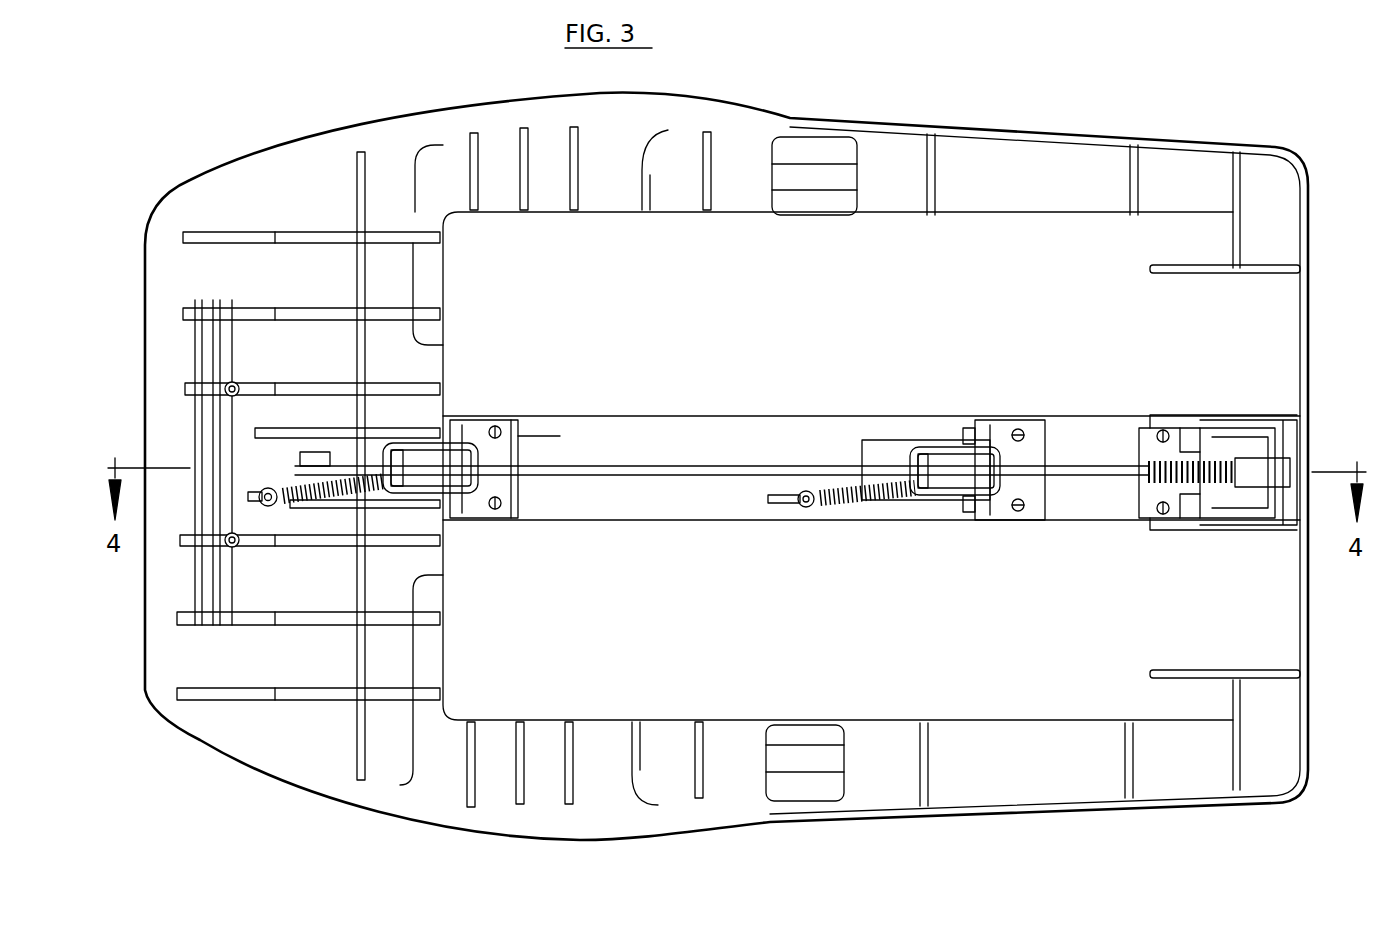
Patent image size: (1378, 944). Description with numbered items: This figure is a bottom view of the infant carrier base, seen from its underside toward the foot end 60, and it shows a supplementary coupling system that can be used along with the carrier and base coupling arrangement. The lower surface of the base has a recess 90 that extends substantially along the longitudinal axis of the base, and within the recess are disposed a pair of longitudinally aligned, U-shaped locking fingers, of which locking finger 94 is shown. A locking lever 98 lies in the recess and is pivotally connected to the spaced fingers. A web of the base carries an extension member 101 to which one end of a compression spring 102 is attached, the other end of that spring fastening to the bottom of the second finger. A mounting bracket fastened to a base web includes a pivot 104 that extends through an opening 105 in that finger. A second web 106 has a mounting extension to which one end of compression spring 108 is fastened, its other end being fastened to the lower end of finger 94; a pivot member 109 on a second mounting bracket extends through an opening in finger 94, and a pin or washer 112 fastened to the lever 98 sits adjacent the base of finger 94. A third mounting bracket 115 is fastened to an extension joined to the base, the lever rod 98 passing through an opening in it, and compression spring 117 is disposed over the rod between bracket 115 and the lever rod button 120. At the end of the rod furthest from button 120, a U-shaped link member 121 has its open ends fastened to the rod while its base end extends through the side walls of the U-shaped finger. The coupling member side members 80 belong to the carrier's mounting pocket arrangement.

The foot end 60 is at (145, 262).
The side members 80 is at (660, 510).
The recess 90 is at (714, 414).
The locking finger 94 is at (934, 445).
The locking lever 98 is at (644, 464).
The extension member 101 is at (272, 487).
The compression spring 102 is at (297, 508).
The pivot 104 is at (472, 420).
The opening 105 is at (548, 436).
The second web 106 is at (808, 490).
The compression spring 108 is at (856, 508).
The pivot member 109 is at (992, 422).
The pin or washer 112 is at (922, 450).
The third mounting bracket 115 is at (1192, 520).
The compression spring 117 is at (1192, 426).
The lever rod button 120 is at (1286, 438).
The U-shaped link member 121 is at (446, 425).